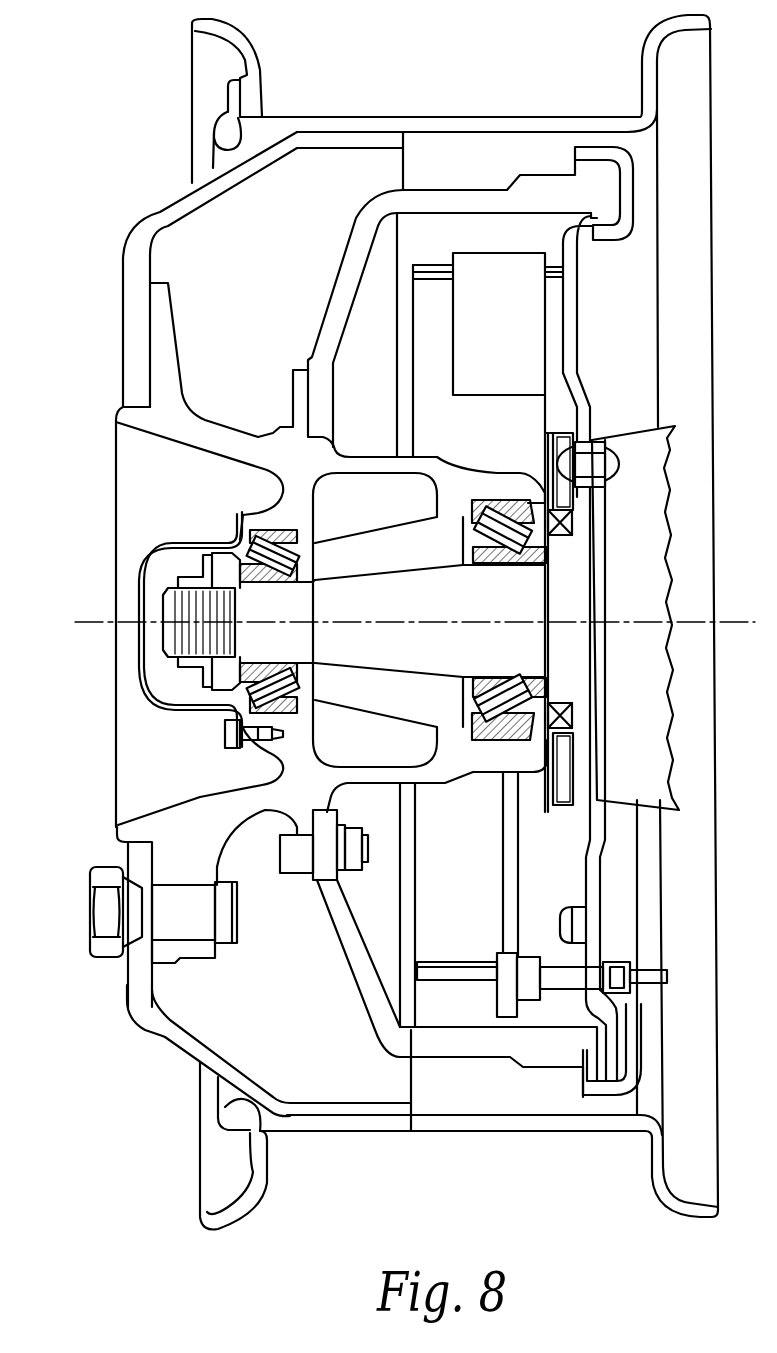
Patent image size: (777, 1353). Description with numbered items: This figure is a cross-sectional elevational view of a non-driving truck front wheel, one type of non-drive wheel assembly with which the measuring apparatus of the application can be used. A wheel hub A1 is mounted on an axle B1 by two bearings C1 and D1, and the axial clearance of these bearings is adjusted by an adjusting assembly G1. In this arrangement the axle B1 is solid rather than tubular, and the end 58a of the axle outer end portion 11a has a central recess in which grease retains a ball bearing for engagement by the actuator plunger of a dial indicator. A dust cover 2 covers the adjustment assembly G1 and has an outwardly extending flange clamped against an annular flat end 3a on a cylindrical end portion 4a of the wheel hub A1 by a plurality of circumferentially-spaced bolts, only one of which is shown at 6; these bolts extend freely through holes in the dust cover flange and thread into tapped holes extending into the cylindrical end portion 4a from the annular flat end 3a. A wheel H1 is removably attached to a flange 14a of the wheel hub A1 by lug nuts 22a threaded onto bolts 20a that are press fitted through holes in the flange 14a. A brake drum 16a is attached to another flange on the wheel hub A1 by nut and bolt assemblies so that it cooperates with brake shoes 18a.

The wheel H1 is at (430, 108).
The brake drum 16a is at (423, 189).
The flange 14a is at (167, 342).
The wheel hub A1 is at (445, 451).
The bearing C1 is at (500, 490).
The bearing D1 is at (285, 524).
The adjusting assembly G1 is at (188, 545).
The annular flat end 3a is at (260, 518).
The cylindrical end portion 4a is at (263, 748).
The dust cover 2 is at (150, 553).
The end of axle outer end portion 58a is at (160, 602).
The hub nut 11a is at (180, 643).
The bolt 6 is at (225, 728).
The axle B1 is at (377, 676).
The lug nut 22a is at (107, 947).
The bolt 20a is at (233, 923).
The brake shoe 18a is at (453, 940).